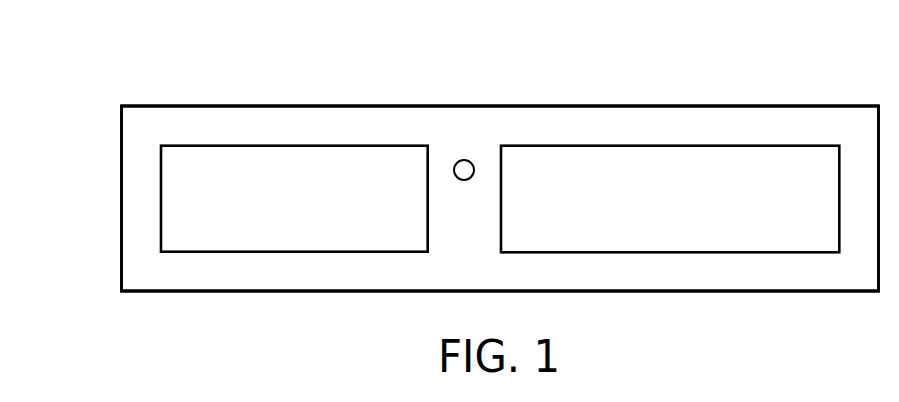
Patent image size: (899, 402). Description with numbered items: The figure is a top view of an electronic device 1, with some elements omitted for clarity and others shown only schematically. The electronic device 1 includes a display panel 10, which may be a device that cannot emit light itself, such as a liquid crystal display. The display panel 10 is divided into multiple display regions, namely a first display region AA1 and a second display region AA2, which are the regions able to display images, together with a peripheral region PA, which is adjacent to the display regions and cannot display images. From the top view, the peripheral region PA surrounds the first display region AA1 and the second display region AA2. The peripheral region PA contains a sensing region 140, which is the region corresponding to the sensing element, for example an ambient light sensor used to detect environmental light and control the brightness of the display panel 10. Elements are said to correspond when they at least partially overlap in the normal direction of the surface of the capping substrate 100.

The electronic device 1 is at (82, 64).
The display panel 10 is at (190, 92).
The capping substrate 100 is at (667, 130).
The sensing region 140 is at (463, 160).
The first display region AA1 is at (242, 225).
The second display region AA2 is at (780, 223).
The peripheral region PA is at (680, 268).